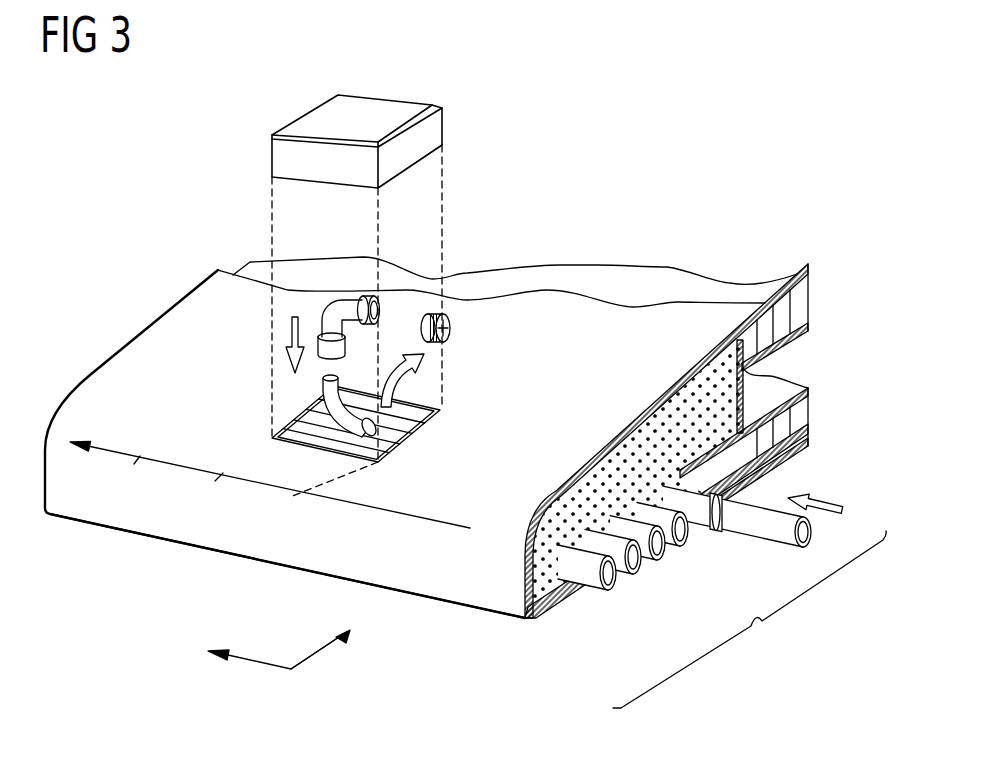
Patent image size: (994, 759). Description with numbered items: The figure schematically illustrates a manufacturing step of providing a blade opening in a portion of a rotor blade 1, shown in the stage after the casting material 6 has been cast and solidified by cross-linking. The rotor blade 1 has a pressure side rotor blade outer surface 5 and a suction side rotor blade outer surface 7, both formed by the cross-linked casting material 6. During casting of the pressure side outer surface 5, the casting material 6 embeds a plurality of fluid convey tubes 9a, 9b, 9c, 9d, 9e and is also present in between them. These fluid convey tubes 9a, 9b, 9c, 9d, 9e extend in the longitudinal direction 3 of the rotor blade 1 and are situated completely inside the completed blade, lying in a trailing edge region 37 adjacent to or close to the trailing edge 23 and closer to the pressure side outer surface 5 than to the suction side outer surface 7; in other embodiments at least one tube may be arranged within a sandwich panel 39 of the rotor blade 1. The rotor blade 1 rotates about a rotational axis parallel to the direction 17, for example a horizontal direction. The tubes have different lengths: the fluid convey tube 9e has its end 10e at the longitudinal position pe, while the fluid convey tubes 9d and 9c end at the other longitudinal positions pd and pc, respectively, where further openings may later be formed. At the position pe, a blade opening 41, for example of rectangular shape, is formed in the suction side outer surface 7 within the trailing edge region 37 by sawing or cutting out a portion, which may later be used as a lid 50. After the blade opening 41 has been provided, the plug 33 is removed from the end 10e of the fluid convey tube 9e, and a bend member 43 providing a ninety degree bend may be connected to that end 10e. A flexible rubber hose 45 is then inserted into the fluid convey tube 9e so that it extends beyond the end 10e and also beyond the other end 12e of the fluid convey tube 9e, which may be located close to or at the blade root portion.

The rotor blade 1 is at (146, 289).
The longitudinal direction 3 is at (125, 458).
The pressure side rotor blade outer surface 5 is at (550, 616).
The casting material 6 is at (737, 341).
The suction side rotor blade outer surface 7 is at (674, 322).
The fluid convey tube 9a is at (609, 591).
The fluid convey tube 9b is at (636, 573).
The fluid convey tube 9c is at (662, 556).
The fluid convey tube 9d is at (686, 536).
The fluid convey tube 9e is at (406, 422).
The end of fluid convey tube 10e is at (378, 432).
The another end of fluid convey tube 12e is at (722, 497).
The direction 17 is at (335, 640).
The trailing edge 23 is at (270, 556).
The plug 33 is at (451, 331).
The trailing edge region 37 is at (749, 619).
The sandwich panel 39 is at (821, 438).
The blade opening 41 is at (273, 437).
The bend member 43 is at (338, 302).
The rubber hose 45 is at (322, 383).
The lid 50 is at (407, 104).
The longitudinal position pc is at (129, 468).
The longitudinal position pd is at (199, 488).
The longitudinal position pe is at (282, 506).